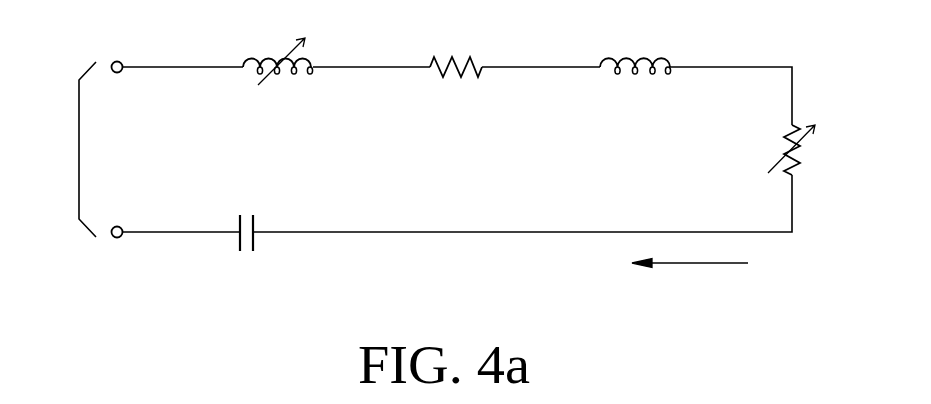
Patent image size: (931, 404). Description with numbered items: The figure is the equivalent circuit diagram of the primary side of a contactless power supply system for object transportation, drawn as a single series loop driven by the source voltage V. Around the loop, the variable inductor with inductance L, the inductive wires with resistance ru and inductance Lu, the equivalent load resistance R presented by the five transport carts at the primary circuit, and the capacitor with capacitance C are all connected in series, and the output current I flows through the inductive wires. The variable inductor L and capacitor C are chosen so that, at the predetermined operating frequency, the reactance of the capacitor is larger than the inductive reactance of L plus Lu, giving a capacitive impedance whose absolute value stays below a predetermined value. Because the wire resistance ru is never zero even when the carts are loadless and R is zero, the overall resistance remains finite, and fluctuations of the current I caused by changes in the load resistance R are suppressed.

The source voltage V is at (65, 149).
The inductance of the variable inductor L is at (278, 51).
The resistance of the inductive wires ru is at (456, 51).
The inductance of the inductive wires Lu is at (635, 46).
The equivalent load resistance R is at (802, 150).
The capacitance of the capacitor C is at (247, 252).
The output current I is at (711, 297).